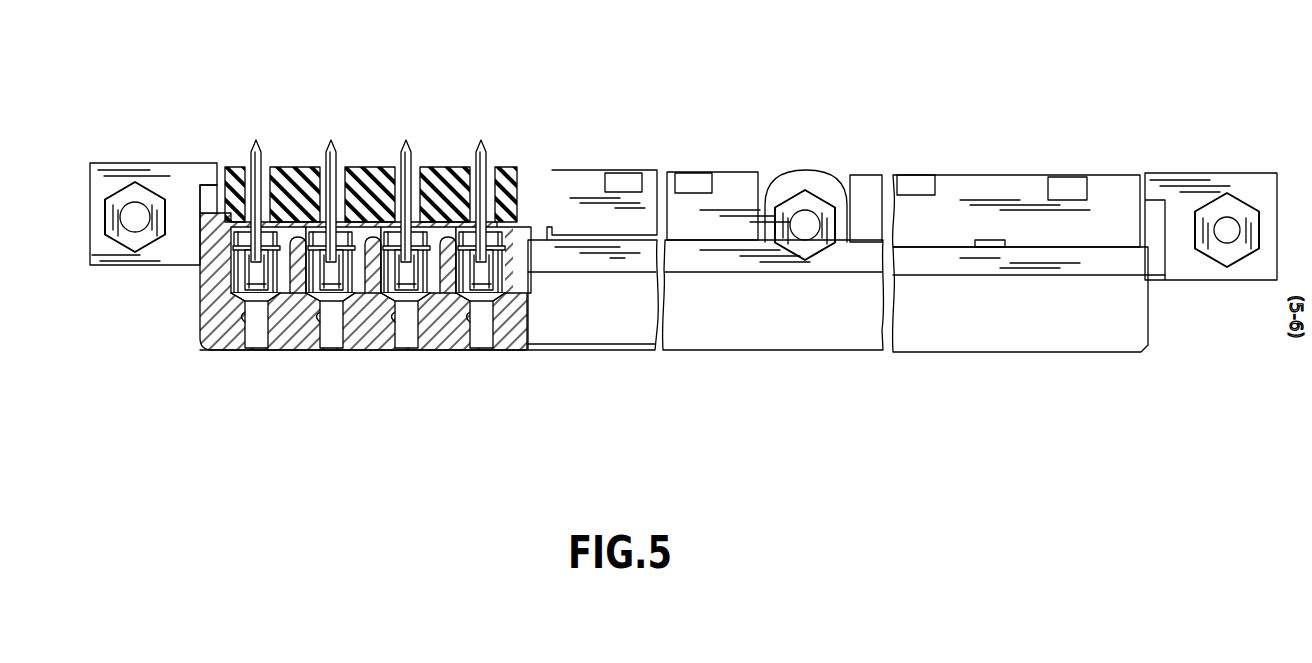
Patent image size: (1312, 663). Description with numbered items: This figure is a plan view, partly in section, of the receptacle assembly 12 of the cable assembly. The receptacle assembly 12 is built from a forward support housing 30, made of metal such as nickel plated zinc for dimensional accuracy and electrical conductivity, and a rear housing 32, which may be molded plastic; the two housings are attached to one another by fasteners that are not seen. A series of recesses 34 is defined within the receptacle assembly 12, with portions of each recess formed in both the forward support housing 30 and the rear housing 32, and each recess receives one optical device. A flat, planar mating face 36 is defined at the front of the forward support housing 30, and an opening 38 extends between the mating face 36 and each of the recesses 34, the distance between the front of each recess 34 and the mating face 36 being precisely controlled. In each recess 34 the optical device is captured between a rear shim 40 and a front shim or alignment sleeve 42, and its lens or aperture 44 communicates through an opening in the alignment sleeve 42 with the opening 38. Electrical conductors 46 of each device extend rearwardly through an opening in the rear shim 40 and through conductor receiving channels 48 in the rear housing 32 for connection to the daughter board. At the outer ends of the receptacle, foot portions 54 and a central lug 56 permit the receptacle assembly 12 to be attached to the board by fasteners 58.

The receptacle assembly 12 is at (568, 98).
The forward support housing 30 is at (998, 337).
The rear housing 32 is at (968, 195).
The recesses 34 is at (228, 283).
The mating face 36 is at (738, 352).
The opening 38 is at (208, 343).
The rear shim 40 is at (283, 168).
The alignment sleeve 42 is at (225, 300).
The lens 44 is at (225, 314).
The electrical conductors 46 is at (257, 150).
The conductor receiving channels 48 is at (232, 170).
The foot portions 54 is at (140, 172).
The central lug 56 is at (795, 178).
The fasteners 58 is at (135, 225).